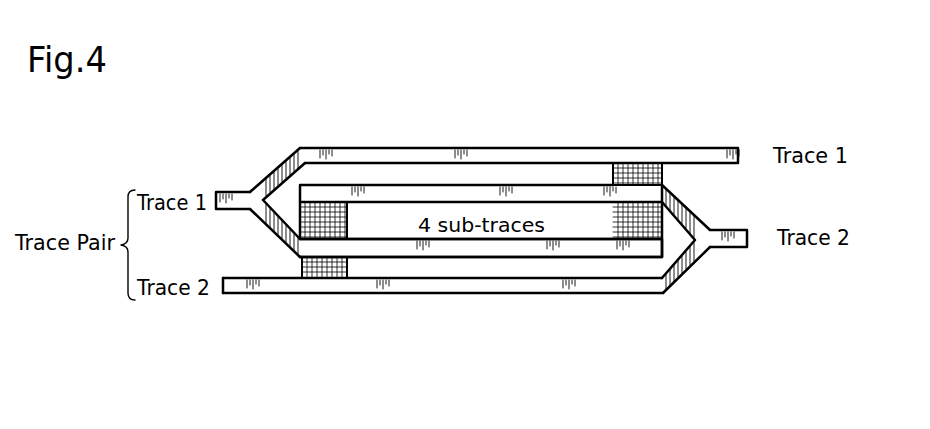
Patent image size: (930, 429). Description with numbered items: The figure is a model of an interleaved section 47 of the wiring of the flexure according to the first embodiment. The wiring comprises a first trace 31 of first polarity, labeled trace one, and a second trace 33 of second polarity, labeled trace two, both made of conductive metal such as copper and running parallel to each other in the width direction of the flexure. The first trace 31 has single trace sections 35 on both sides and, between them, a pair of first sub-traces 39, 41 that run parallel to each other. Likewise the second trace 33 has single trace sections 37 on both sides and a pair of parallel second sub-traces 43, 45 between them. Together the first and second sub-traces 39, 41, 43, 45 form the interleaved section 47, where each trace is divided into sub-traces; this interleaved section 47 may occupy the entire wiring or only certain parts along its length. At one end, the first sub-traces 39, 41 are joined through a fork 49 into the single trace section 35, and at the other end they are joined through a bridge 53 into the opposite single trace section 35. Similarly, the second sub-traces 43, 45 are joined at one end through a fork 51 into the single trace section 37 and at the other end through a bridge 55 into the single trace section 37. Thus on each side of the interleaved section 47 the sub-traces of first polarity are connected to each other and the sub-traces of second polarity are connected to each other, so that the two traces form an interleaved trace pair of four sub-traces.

The first trace 31 is at (478, 153).
The second trace 33 is at (505, 294).
The single trace section 35 is at (227, 192).
The single trace section 37 is at (727, 248).
The first sub-trace 39 is at (397, 258).
The first sub-trace 41 is at (397, 146).
The second sub-trace 43 is at (537, 294).
The second sub-trace 45 is at (498, 216).
The interleaved section 47 is at (637, 122).
The fork 49 is at (277, 170).
The fork 51 is at (695, 212).
The bridge 53 is at (665, 167).
The bridge 55 is at (346, 270).